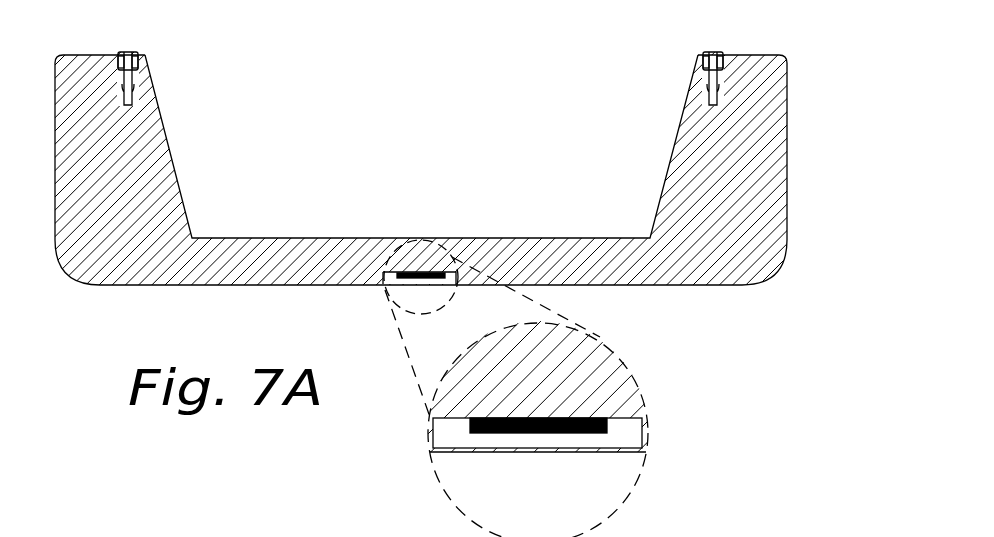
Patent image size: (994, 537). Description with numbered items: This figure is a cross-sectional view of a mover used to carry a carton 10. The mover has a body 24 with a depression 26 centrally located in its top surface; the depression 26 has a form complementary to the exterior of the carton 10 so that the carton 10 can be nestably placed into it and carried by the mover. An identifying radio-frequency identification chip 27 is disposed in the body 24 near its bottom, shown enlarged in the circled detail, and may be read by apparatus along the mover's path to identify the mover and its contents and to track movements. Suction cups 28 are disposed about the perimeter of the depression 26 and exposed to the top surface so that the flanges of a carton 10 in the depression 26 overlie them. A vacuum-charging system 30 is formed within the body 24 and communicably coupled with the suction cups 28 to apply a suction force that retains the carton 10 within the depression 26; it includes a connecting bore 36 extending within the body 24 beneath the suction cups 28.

The carton 10 is at (787, 96).
The body 24 is at (774, 157).
The depression 26 is at (497, 79).
The radio-frequency identification (RFID) chip 27 is at (592, 418).
The suction cups 28 is at (713, 55).
The vacuum-charging system 30 is at (843, 128).
The connecting bore 36 is at (136, 87).